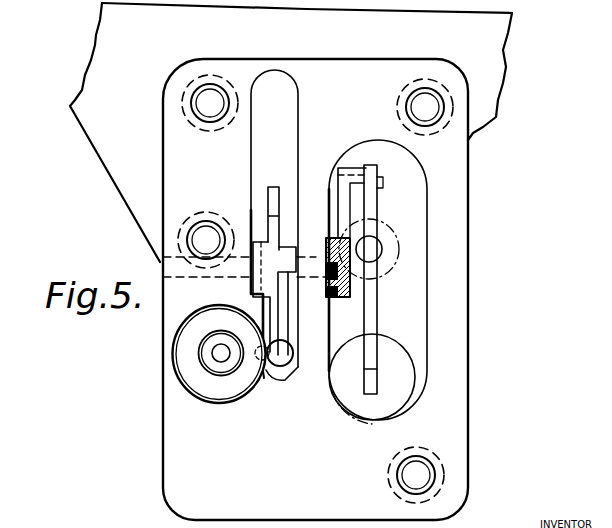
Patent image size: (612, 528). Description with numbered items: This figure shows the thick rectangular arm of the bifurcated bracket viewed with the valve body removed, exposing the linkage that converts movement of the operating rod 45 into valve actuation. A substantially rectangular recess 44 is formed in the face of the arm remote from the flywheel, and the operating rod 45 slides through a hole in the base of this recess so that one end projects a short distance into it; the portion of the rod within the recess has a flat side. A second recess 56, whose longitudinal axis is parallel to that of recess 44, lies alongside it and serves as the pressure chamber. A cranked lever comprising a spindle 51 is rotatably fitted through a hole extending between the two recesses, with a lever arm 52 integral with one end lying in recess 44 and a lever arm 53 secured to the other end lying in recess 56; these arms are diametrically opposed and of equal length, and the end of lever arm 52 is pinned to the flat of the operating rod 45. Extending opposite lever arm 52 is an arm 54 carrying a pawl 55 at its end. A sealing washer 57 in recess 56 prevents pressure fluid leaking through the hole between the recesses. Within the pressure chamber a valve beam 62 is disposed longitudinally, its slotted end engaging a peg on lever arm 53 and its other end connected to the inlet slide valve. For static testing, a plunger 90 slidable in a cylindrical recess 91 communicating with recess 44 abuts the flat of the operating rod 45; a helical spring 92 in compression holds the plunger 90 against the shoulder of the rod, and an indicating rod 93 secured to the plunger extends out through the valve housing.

The recess 44 is at (280, 374).
The operating rod 45 is at (285, 365).
The spindle 51 is at (305, 257).
The lever arm 52 is at (266, 318).
The lever arm 53 is at (338, 205).
The arm 54 is at (267, 227).
The pawl 55 is at (279, 187).
The second recess 56 is at (414, 338).
The sealing washer 57 is at (349, 284).
The valve beam 62 is at (370, 263).
The plunger 90 is at (227, 386).
The cylindrical recess 91 is at (195, 392).
The helical spring 92 is at (199, 362).
The indicating rod 93 is at (218, 354).